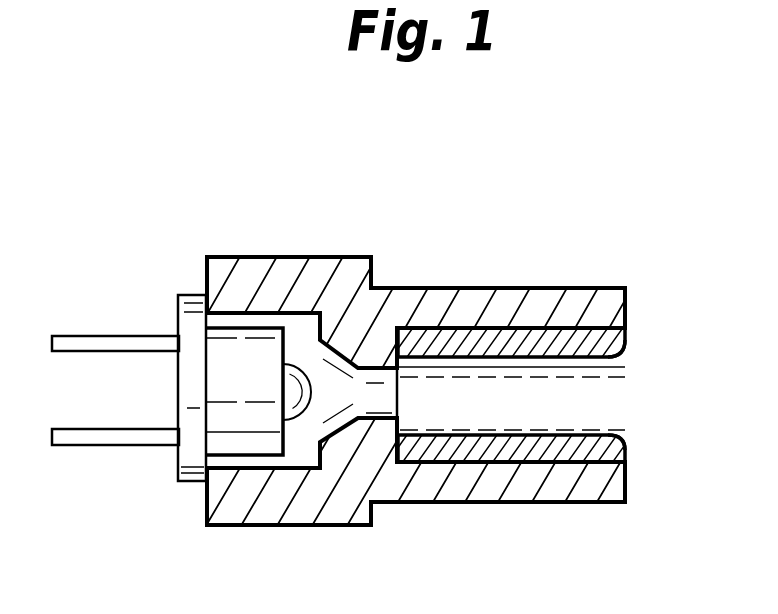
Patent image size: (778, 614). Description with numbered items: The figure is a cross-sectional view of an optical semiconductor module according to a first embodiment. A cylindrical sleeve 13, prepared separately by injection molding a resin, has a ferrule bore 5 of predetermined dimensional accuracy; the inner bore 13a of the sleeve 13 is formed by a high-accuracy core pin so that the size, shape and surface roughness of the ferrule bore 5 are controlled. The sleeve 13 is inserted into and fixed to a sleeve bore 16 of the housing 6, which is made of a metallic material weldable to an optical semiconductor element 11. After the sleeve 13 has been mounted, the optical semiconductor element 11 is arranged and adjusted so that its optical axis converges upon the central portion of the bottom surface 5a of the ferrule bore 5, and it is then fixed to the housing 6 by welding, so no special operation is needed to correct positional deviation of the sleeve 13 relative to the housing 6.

The ferrule bore 5 is at (577, 435).
The bottom surface of the ferrule bore 5a is at (402, 388).
The housing 6 is at (467, 290).
The optical semiconductor element 11 is at (223, 420).
The cylindrical sleeve 13 is at (553, 337).
The inner bore of the sleeve 13a is at (488, 430).
The sleeve bore 16 is at (603, 453).